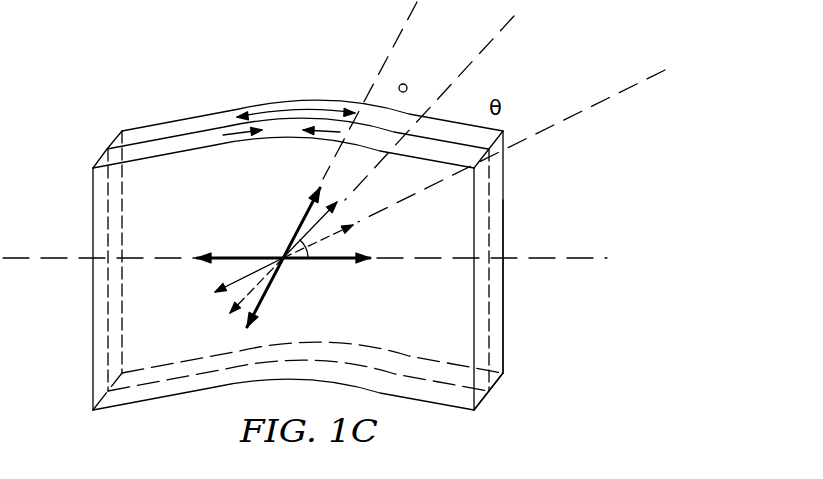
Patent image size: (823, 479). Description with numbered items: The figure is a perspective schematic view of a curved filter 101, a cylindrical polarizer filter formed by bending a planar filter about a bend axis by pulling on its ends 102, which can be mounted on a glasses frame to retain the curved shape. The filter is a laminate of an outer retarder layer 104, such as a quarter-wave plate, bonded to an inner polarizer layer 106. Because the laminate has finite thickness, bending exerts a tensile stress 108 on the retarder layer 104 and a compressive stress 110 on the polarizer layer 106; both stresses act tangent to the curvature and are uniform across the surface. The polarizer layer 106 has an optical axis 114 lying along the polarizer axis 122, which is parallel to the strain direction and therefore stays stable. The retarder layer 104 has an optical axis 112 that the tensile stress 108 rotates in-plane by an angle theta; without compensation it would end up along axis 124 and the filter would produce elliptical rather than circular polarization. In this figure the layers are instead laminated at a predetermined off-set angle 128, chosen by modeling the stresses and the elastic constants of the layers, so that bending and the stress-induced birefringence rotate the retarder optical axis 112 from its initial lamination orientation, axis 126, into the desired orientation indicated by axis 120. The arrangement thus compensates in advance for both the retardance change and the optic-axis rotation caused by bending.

The curved filter 101 is at (184, 95).
The ends 102 is at (147, 295).
The retarder layer 104 is at (505, 348).
The polarizer layer 106 is at (482, 403).
The tensile stress 108 is at (300, 108).
The compressive stress 110 is at (283, 132).
The optical axis of the retarder layer 112 is at (308, 258).
The optical axis of the polarizer layer 114 is at (250, 257).
The axis 120 is at (503, 27).
The polarizer axis 122 is at (552, 256).
The axis 124 is at (590, 108).
The axis 126 is at (394, 54).
The predetermined off-set angle 128 is at (407, 84).